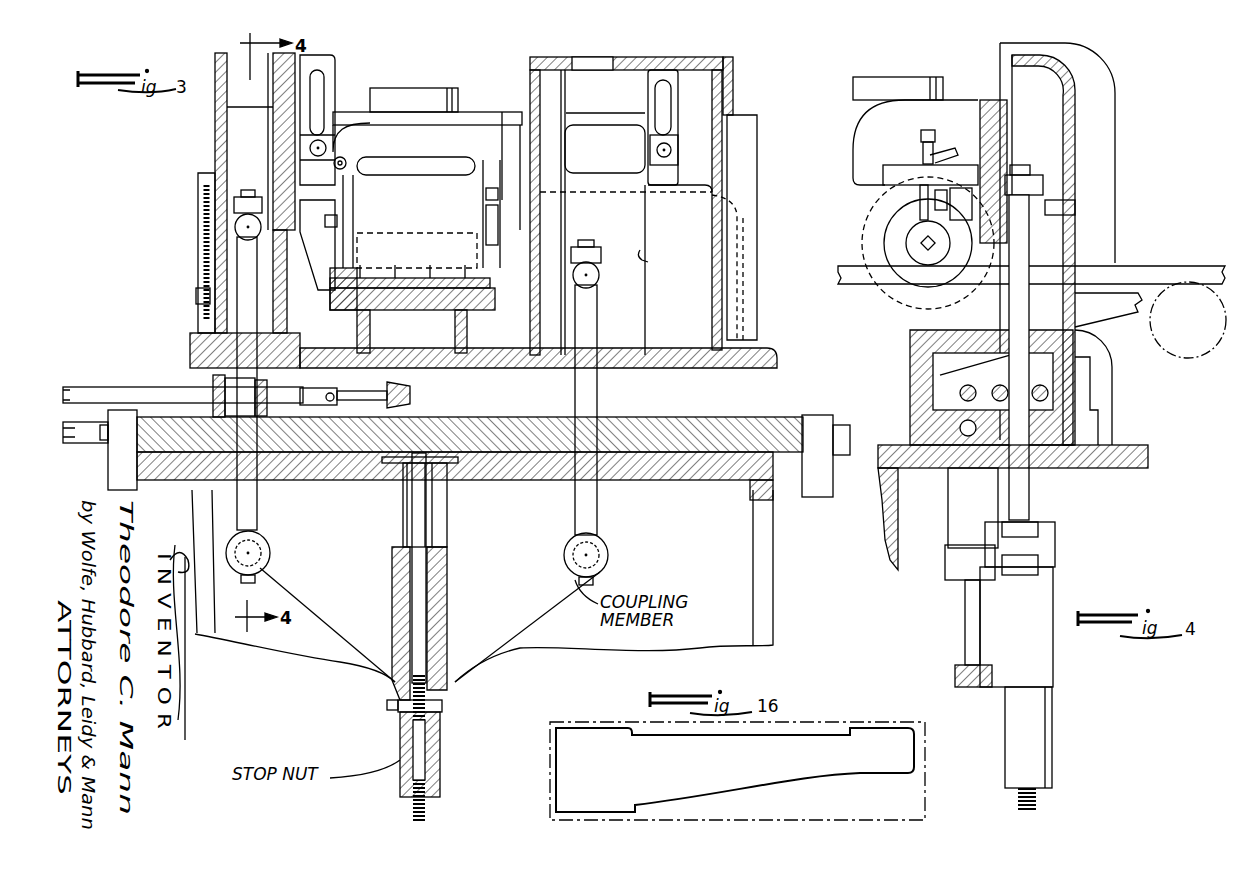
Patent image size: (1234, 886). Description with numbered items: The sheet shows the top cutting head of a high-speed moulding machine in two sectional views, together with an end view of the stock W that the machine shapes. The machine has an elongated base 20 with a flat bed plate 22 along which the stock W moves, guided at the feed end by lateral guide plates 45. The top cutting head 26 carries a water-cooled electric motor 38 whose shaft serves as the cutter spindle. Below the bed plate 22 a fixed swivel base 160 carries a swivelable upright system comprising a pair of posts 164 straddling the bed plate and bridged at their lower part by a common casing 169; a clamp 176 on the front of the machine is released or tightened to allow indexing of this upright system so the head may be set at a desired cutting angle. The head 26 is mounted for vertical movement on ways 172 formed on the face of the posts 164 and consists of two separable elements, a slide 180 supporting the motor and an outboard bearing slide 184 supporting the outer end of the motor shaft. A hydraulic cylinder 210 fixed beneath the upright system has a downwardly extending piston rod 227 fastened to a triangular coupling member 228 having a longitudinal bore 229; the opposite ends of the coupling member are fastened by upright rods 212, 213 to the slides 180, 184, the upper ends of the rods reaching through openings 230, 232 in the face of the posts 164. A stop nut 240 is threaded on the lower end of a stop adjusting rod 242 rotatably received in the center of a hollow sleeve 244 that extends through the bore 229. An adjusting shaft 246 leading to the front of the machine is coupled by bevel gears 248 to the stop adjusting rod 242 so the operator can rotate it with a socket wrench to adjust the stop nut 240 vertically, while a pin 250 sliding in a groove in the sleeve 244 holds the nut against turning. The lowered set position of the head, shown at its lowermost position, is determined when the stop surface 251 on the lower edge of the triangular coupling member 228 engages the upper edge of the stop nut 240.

In FIG. 3, the upright post 164 is at (216, 108).
In FIG. 4, the upright post 164 is at (1110, 162).
In FIG. 3, the opening 232 is at (236, 131).
In FIG. 3, the outboard bearing slide 184 is at (243, 150).
In FIG. 4, the outboard bearing slide 184 is at (992, 100).
In FIG. 3, the ways 172 is at (524, 68).
In FIG. 3, the top cutting head 26 is at (741, 70).
In FIG. 4, the top cutting head 26 is at (850, 158).
In FIG. 3, the slide 180 is at (752, 132).
In FIG. 3, the electric motor 38 is at (748, 210).
In FIG. 4, the electric motor 38 is at (868, 209).
In FIG. 3, the opening 230 is at (661, 256).
In FIG. 3, the stock W is at (393, 280).
In FIG. 4, the stock W is at (1152, 266).
In FIG. 16, the stock W is at (850, 735).
In FIG. 3, the bed plate 22 is at (427, 292).
In FIG. 4, the bed plate 22 is at (857, 296).
In FIG. 3, the lateral guide plate 45 is at (486, 283).
In FIG. 3, the adjusting shaft 246 is at (140, 388).
In FIG. 3, the bevel gears 248 is at (412, 402).
In FIG. 3, the casing 169 is at (513, 370).
In FIG. 4, the casing 169 is at (915, 420).
In FIG. 3, the clamp 176 is at (110, 470).
In FIG. 3, the upright rod 212 is at (257, 490).
In FIG. 4, the upright rod 212 is at (1030, 500).
In FIG. 3, the hydraulic cylinder 210 is at (448, 505).
In FIG. 4, the hydraulic cylinder 210 is at (950, 530).
In FIG. 3, the upright rod 213 is at (597, 497).
In FIG. 3, the swivel base 160 is at (684, 480).
In FIG. 4, the swivel base 160 is at (1095, 470).
In FIG. 3, the base 20 is at (775, 575).
In FIG. 4, the base 20 is at (888, 570).
In FIG. 3, the longitudinal bore 229 is at (440, 600).
In FIG. 3, the hollow sleeve 244 is at (428, 624).
In FIG. 3, the triangular coupling member 228 is at (520, 602).
In FIG. 4, the triangular coupling member 228 is at (1050, 605).
In FIG. 3, the stop surface 251 is at (443, 703).
In FIG. 4, the stop surface 251 is at (1005, 690).
In FIG. 3, the pin 250 is at (390, 705).
In FIG. 3, the stop nut 240 is at (441, 733).
In FIG. 4, the stop nut 240 is at (1046, 740).
In FIG. 3, the stop adjusting rod 242 is at (430, 752).
In FIG. 4, the stop adjusting rod 242 is at (1037, 802).
In FIG. 4, the piston rod 227 is at (964, 638).